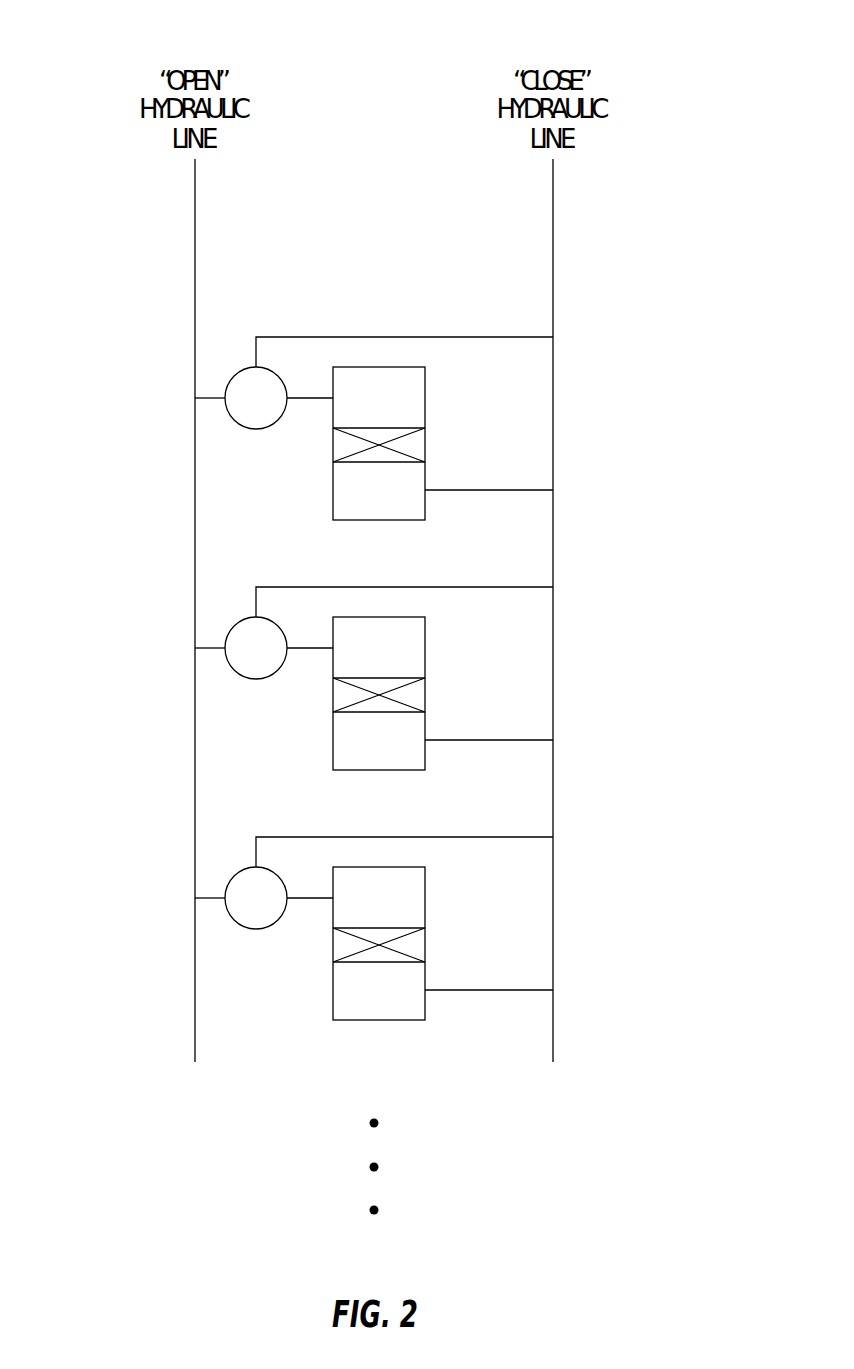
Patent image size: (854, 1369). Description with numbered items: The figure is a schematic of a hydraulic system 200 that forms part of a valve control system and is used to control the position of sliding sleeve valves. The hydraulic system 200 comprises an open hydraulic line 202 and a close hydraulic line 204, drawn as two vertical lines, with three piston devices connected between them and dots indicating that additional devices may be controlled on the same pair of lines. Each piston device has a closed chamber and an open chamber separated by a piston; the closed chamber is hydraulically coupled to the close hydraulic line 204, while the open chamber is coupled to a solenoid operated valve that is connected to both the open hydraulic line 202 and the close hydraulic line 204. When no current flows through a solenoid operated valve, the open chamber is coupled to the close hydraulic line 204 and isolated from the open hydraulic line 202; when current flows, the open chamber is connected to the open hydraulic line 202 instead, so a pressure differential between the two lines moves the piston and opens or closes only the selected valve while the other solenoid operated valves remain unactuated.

The hydraulic system 200 is at (663, 53).
The open hydraulic line 202 is at (194, 250).
The close hydraulic line 204 is at (555, 250).